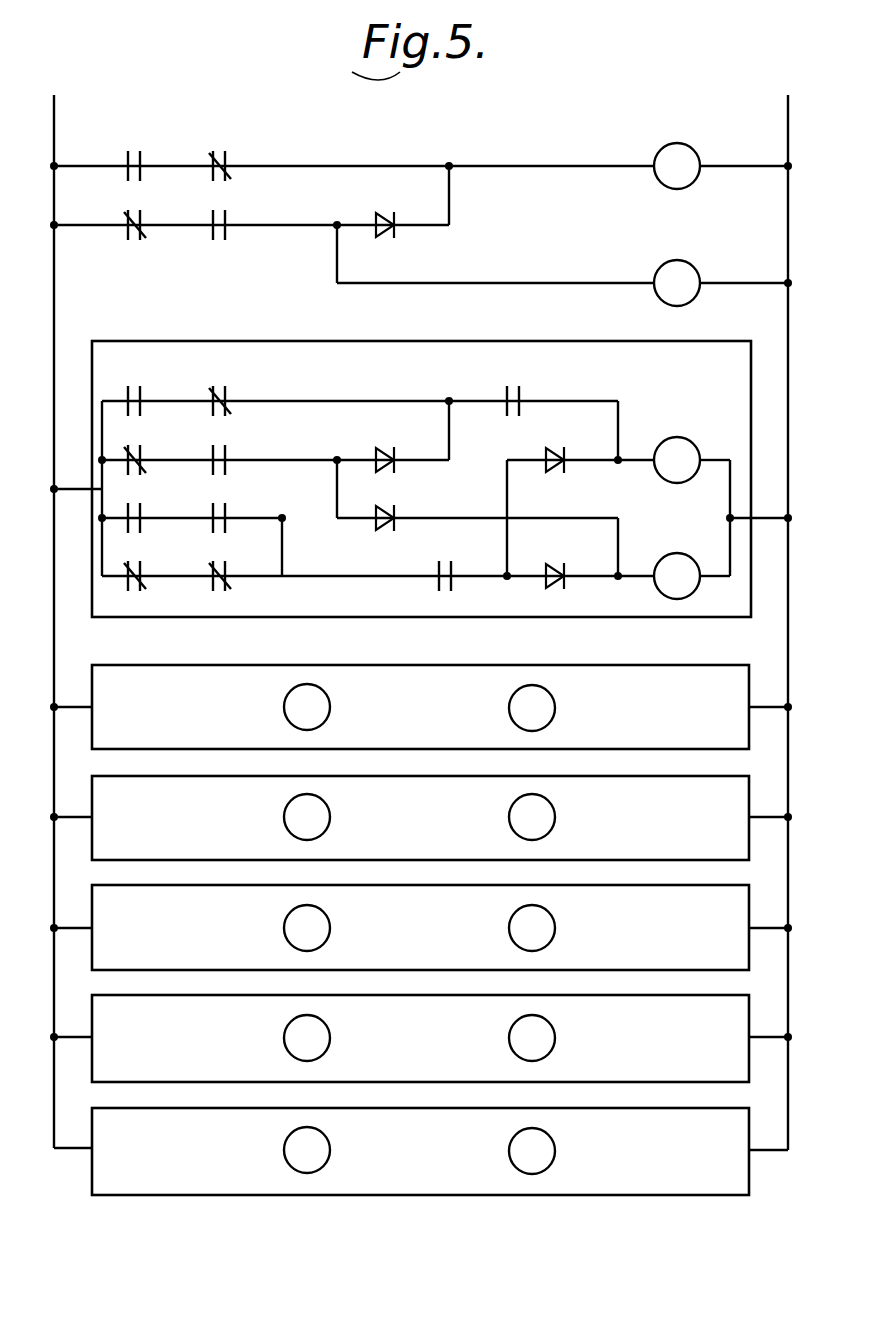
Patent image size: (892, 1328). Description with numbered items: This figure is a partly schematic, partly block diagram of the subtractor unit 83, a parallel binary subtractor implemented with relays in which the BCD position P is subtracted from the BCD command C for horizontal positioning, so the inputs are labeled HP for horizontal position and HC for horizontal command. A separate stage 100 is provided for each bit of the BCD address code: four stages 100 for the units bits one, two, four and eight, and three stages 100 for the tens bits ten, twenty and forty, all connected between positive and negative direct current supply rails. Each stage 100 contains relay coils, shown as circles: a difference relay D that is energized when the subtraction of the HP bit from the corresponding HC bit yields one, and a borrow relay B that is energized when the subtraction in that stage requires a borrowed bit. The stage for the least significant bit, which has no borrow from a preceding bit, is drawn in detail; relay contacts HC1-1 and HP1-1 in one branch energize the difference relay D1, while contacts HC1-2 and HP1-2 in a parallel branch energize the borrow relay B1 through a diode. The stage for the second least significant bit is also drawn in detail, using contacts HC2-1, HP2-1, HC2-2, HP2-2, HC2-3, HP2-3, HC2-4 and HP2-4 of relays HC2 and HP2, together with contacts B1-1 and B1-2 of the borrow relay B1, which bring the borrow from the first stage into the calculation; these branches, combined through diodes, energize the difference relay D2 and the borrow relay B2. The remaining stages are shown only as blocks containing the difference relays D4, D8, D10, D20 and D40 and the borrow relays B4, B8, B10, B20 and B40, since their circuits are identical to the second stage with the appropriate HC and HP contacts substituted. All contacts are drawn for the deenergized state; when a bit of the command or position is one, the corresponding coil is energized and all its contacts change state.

The subtractor unit 83 is at (445, 128).
The stage 100 is at (525, 244).
The difference relay D1 is at (677, 152).
The borrow relay B1 is at (677, 269).
The difference relay D2 is at (677, 445).
The borrow relay B2 is at (677, 562).
The difference relay D4 is at (277, 707).
The borrow relay B4 is at (553, 708).
The difference relay D8 is at (278, 817).
The borrow relay B8 is at (553, 817).
The difference relay D10 is at (276, 928).
The borrow relay B10 is at (559, 928).
The difference relay D20 is at (275, 1038).
The borrow relay B20 is at (559, 1038).
The difference relay D40 is at (276, 1150).
The borrow relay B40 is at (559, 1151).
The relay contact HC1-1 is at (139, 154).
The relay contact HP1-1 is at (218, 154).
The relay contact HC1-2 is at (134, 213).
The relay contact HP1-2 is at (217, 213).
The relay contact HC2-1 is at (138, 390).
The relay contact HP2-1 is at (218, 390).
The relay contact HC2-2 is at (135, 448).
The relay contact HP2-2 is at (219, 448).
The relay contact HC2-3 is at (137, 507).
The relay contact HP2-3 is at (219, 507).
The relay contact HC2-4 is at (133, 565).
The relay contact HP2-4 is at (219, 565).
The relay contact B1-1 is at (511, 387).
The relay contact B1-2 is at (439, 564).
The BCD command C is at (133, 112).
The BCD position P is at (218, 112).